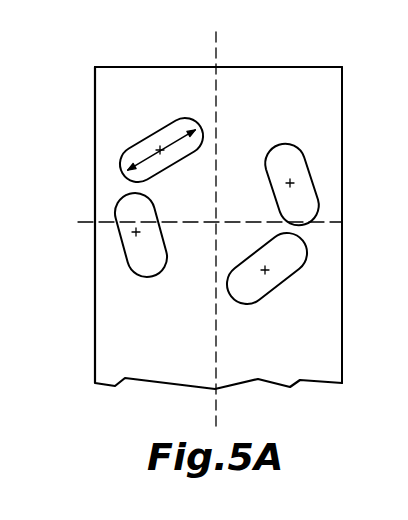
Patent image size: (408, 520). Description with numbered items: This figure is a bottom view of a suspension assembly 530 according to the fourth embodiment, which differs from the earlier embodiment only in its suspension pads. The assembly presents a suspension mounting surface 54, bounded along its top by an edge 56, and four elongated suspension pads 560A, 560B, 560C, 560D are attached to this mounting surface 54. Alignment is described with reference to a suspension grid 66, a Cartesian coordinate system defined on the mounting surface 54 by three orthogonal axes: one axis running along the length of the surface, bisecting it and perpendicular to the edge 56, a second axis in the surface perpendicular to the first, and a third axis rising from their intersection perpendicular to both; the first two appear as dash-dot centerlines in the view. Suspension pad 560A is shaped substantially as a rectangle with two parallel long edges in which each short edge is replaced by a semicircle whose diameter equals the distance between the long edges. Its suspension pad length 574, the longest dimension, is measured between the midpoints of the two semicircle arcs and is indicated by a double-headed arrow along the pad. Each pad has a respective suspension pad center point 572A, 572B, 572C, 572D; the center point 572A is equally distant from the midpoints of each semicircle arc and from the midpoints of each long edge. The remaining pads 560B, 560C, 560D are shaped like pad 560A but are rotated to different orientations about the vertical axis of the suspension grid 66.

The suspension assembly 530 is at (125, 67).
The edge 56 is at (196, 67).
The suspension mounting surface 54 is at (158, 315).
The suspension grid 66 is at (217, 36).
The suspension pad length 574 is at (186, 127).
The suspension pad 560A is at (127, 162).
The suspension pad 560B is at (132, 270).
The suspension pad 560C is at (240, 290).
The suspension pad 560D is at (281, 153).
The suspension pad center point 572A is at (159, 150).
The suspension pad center point 572B is at (136, 233).
The suspension pad center point 572C is at (265, 272).
The suspension pad center point 572D is at (291, 183).